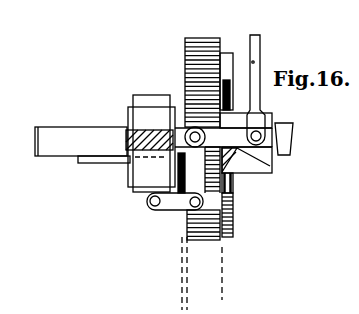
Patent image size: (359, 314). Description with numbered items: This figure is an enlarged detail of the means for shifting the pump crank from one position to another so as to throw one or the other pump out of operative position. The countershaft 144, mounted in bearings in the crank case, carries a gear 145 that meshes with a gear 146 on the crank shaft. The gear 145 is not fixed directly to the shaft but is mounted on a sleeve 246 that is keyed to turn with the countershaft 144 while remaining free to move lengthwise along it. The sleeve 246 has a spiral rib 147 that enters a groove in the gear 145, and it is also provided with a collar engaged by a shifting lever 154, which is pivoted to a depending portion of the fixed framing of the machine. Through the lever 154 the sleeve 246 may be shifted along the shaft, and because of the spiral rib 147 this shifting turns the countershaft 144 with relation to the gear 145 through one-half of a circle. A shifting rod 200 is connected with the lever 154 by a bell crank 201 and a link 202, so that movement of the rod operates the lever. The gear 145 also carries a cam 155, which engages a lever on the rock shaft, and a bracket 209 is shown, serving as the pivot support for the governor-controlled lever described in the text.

The countershaft 144 is at (292, 131).
The gear 145 is at (185, 65).
The gear 146 is at (212, 258).
The spiral rib 147 is at (267, 167).
The shifting lever 154 is at (142, 192).
The cam 155 is at (237, 188).
The shifting rod 200 is at (258, 58).
The bell crank 201 is at (238, 217).
The link 202 is at (180, 212).
The bracket 209 is at (125, 133).
The sleeve 246 is at (270, 163).